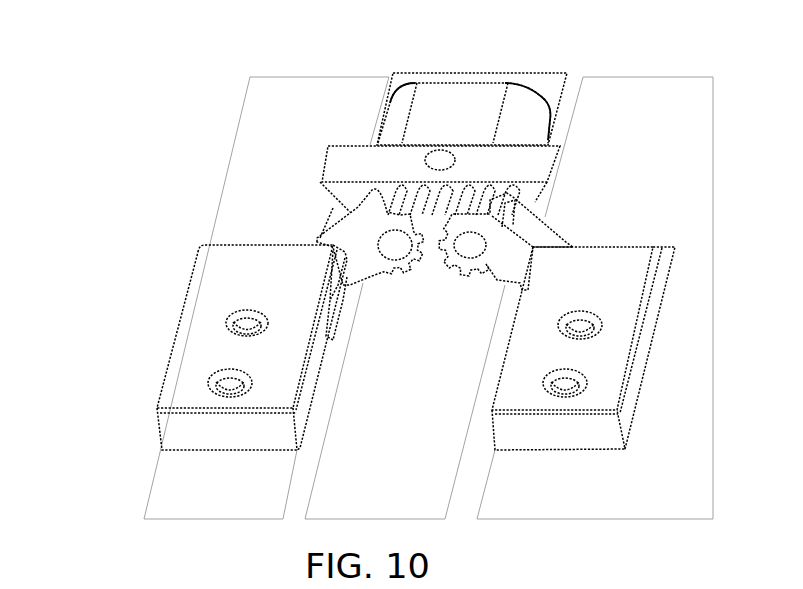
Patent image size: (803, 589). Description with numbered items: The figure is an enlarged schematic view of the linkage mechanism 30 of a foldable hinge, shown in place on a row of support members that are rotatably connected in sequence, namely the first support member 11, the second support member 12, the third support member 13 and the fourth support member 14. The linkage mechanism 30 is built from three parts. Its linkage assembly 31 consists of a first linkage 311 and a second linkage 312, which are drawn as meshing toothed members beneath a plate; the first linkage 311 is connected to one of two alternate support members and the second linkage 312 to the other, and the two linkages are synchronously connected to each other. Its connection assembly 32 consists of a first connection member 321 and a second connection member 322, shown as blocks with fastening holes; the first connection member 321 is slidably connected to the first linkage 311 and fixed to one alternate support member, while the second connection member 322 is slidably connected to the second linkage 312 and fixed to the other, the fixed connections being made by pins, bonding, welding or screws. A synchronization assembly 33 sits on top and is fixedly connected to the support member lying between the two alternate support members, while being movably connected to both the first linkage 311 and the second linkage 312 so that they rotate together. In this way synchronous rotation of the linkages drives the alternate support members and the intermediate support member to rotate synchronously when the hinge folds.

The first support member 11 is at (405, 401).
The second support member 12 is at (298, 88).
The third support member 13 is at (542, 87).
The fourth support member 14 is at (642, 100).
The linkage mechanism 30 is at (352, 281).
The linkage assembly 31 is at (323, 226).
The first linkage 311 is at (358, 255).
The second linkage 312 is at (510, 250).
The connection assembly 32 is at (374, 347).
The first connection member 321 is at (233, 298).
The second connection member 322 is at (537, 372).
The synchronization assembly 33 is at (447, 115).